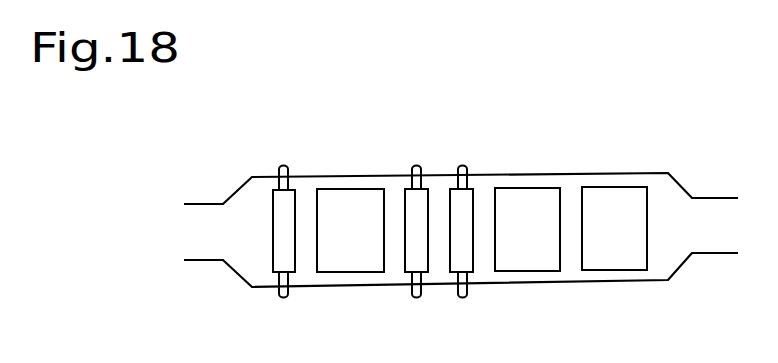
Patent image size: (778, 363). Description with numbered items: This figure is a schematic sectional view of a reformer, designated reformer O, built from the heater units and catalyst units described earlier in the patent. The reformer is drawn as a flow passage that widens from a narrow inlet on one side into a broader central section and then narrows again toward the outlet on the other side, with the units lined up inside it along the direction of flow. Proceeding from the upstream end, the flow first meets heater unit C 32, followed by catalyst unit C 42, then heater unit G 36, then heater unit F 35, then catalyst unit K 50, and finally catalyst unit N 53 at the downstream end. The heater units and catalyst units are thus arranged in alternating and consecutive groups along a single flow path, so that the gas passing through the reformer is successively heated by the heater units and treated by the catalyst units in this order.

The heater unit C 32 is at (273, 186).
The catalyst unit C 42 is at (350, 189).
The heater unit G 36 is at (407, 187).
The heater unit F 35 is at (465, 188).
The catalyst unit K 50 is at (525, 188).
The catalyst unit N 53 is at (612, 187).